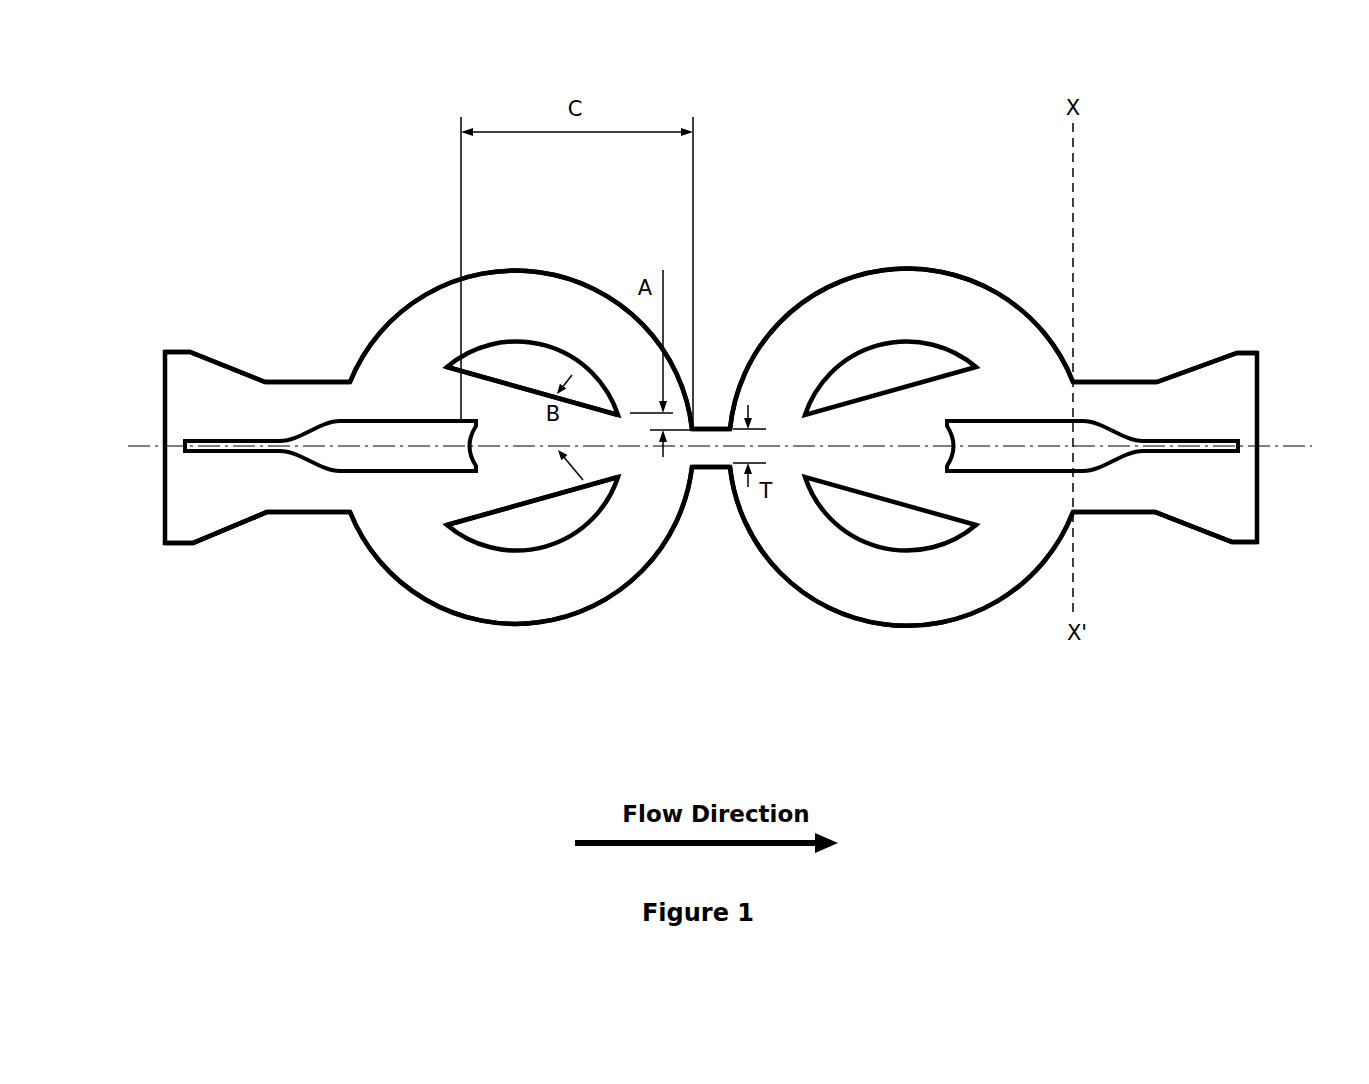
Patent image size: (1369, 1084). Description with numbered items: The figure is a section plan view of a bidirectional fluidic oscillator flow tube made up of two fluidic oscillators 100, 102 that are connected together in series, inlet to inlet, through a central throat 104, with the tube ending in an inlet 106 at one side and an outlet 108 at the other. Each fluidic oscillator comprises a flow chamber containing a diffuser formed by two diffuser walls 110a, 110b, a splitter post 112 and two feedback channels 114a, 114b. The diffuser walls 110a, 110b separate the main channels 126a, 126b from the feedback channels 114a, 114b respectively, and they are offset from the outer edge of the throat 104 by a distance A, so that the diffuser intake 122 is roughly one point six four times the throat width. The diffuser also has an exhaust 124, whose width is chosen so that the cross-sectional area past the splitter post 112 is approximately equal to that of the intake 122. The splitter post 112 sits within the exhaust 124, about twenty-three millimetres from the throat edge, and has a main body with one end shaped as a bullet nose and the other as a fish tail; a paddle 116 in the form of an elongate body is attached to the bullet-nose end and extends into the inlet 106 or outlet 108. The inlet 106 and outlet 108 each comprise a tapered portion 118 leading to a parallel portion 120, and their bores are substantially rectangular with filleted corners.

The fluidic oscillator 100 is at (963, 622).
The fluidic oscillator 102 is at (478, 627).
The throat 104 is at (712, 437).
The inlet 106 is at (207, 493).
The outlet 108 is at (1232, 523).
The diffuser wall 110a is at (543, 523).
The diffuser wall 110b is at (533, 360).
The splitter post 112 is at (392, 446).
The feedback channel 114a is at (614, 553).
The feedback channel 114b is at (437, 318).
The paddle 116 is at (222, 442).
The tapered portion 118 is at (236, 534).
The parallel portion 120 is at (295, 382).
The intake 122 is at (613, 447).
The exhaust 124 is at (447, 393).
The main channel 126a is at (473, 489).
The main channel 126b is at (487, 403).